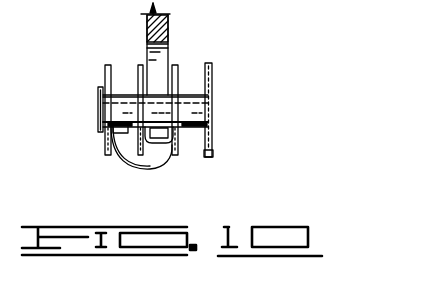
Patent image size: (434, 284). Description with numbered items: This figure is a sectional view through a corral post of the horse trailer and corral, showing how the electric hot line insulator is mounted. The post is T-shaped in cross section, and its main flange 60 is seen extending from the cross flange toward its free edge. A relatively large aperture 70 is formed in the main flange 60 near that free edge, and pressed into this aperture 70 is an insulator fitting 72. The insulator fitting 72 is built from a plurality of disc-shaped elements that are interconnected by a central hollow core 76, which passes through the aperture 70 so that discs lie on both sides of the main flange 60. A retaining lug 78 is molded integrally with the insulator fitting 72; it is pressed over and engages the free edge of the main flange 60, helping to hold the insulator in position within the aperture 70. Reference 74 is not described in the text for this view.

The main flange 60 is at (165, 25).
The aperture 70 is at (158, 55).
The insulator fitting 72 is at (209, 62).
The lower end of side plate 74 is at (211, 157).
The central hollow core 76 is at (122, 97).
The retaining lug 78 is at (160, 166).